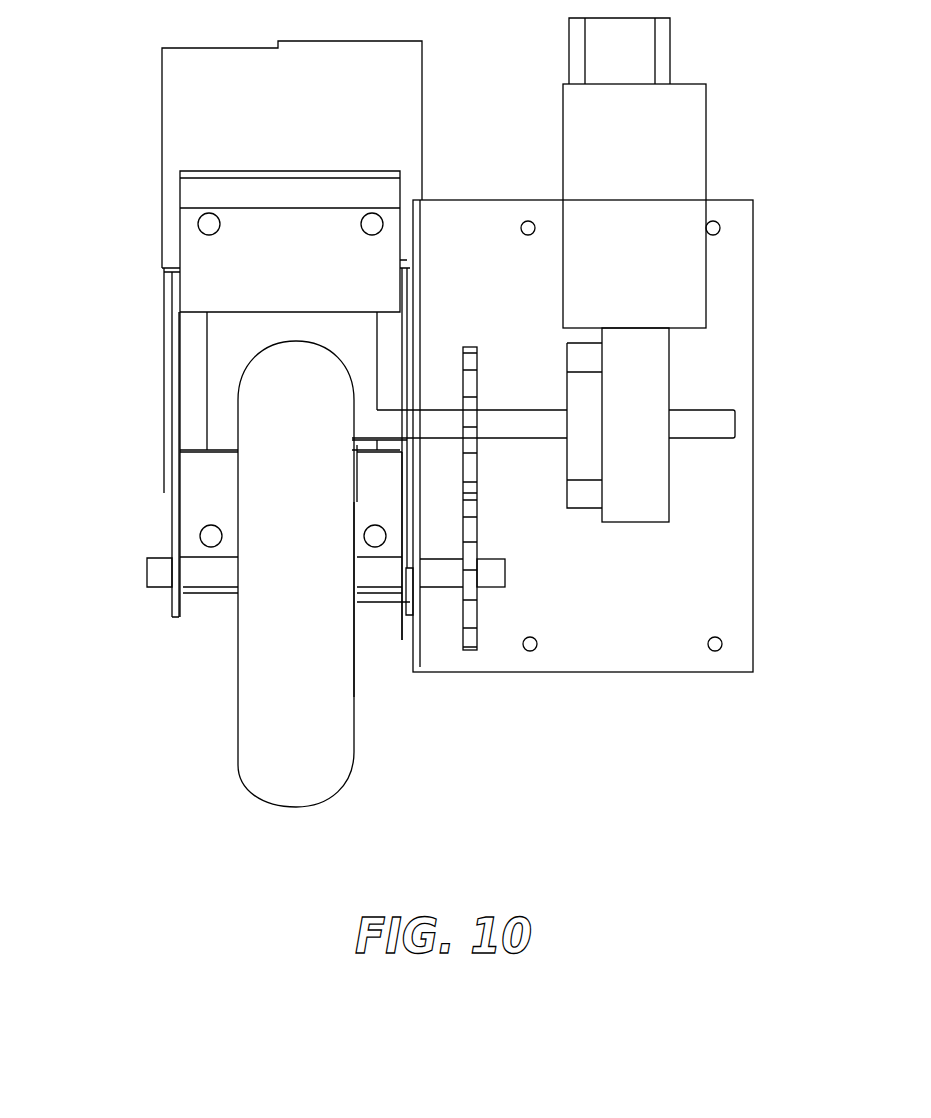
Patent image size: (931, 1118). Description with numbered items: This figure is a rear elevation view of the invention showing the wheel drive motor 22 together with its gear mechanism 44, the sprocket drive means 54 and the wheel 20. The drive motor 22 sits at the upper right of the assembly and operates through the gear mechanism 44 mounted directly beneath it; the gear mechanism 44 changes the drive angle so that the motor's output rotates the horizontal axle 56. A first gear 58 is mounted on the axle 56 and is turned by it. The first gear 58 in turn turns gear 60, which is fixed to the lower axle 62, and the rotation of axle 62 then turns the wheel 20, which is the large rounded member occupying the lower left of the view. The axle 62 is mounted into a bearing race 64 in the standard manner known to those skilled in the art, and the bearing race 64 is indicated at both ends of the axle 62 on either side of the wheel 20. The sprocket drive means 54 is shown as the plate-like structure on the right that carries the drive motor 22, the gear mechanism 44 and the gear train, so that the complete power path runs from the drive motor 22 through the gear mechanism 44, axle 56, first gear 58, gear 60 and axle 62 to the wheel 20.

The wheel 20 is at (257, 753).
The wheel drive motor 22 is at (690, 138).
The gear mechanism 44 is at (647, 363).
The sprocket drive means 54 is at (478, 470).
The axle 56 is at (715, 435).
The first gear 58 is at (460, 387).
The gear 60 is at (468, 652).
The axle 62 is at (491, 562).
The bearing race 64 is at (173, 604).